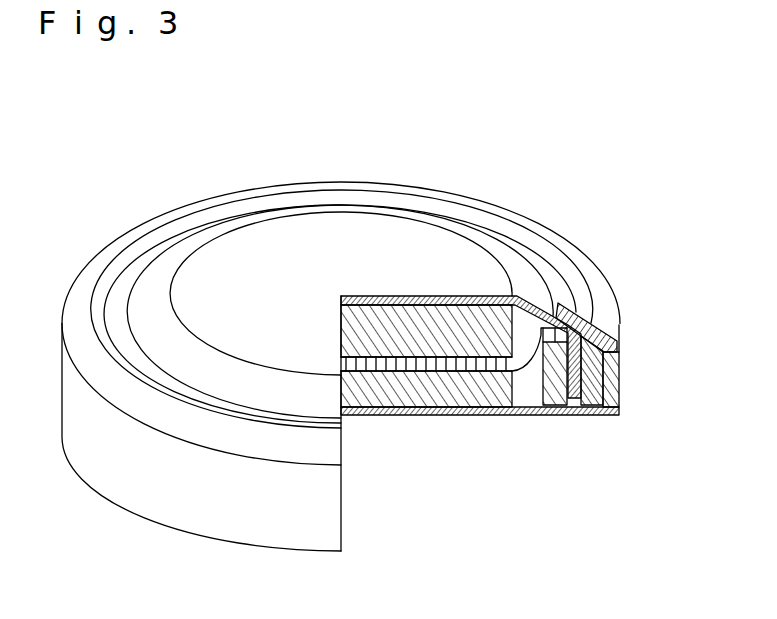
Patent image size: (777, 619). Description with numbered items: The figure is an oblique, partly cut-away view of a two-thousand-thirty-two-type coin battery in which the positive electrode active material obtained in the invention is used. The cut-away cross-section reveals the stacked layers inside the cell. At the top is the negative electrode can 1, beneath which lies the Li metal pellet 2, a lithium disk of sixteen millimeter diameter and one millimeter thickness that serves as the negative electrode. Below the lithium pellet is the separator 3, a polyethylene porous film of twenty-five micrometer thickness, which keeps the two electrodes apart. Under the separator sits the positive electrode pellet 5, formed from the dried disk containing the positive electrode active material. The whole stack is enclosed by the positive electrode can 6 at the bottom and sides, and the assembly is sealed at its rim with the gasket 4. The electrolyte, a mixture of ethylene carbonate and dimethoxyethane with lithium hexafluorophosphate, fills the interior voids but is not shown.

The negative electrode can 1 is at (388, 295).
The Li metal pellet 2 is at (343, 308).
The separator 3 is at (343, 349).
The gasket 4 is at (618, 347).
The positive electrode pellet 5 is at (409, 412).
The positive electrode can 6 is at (618, 397).